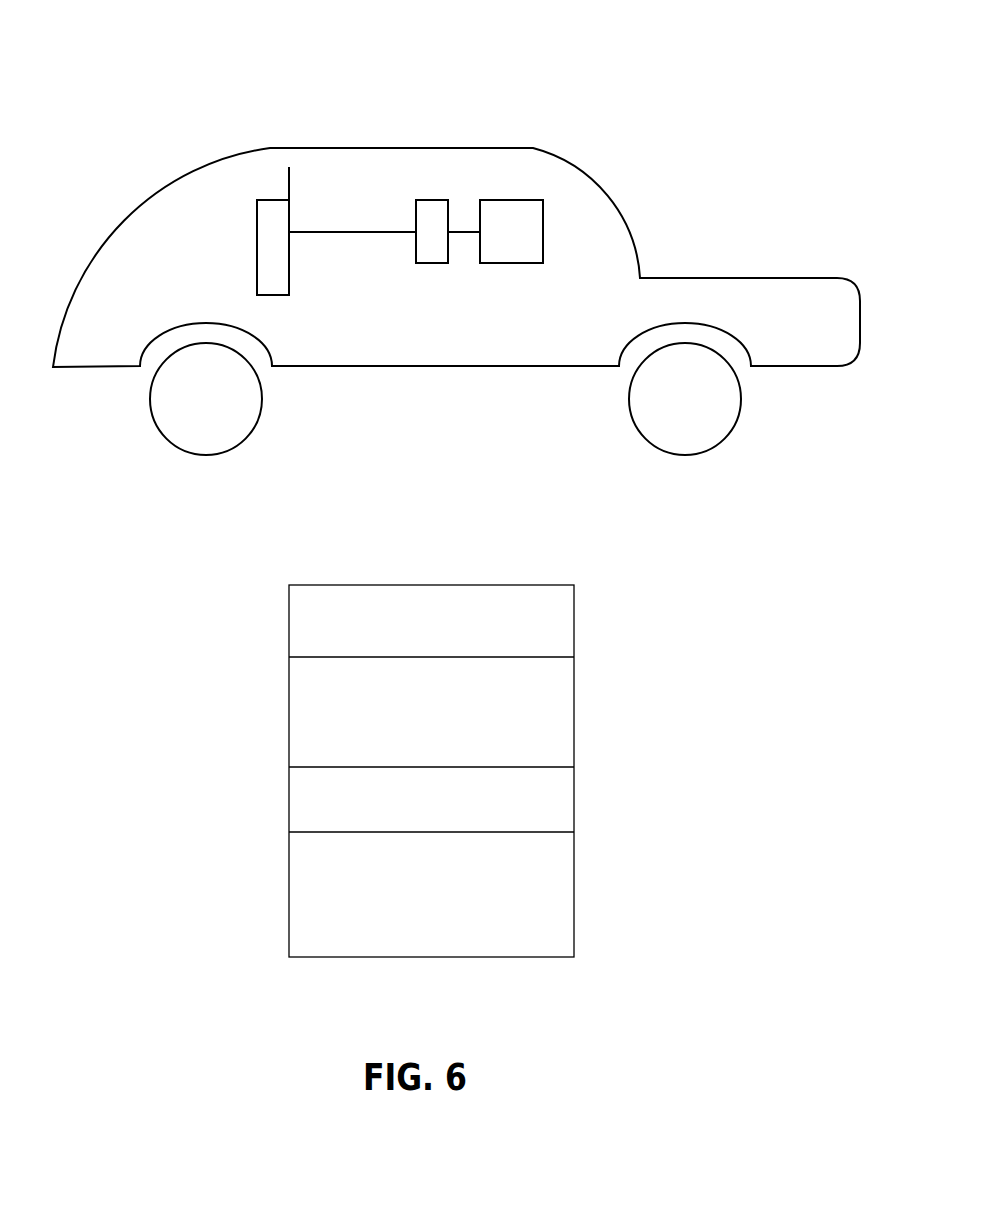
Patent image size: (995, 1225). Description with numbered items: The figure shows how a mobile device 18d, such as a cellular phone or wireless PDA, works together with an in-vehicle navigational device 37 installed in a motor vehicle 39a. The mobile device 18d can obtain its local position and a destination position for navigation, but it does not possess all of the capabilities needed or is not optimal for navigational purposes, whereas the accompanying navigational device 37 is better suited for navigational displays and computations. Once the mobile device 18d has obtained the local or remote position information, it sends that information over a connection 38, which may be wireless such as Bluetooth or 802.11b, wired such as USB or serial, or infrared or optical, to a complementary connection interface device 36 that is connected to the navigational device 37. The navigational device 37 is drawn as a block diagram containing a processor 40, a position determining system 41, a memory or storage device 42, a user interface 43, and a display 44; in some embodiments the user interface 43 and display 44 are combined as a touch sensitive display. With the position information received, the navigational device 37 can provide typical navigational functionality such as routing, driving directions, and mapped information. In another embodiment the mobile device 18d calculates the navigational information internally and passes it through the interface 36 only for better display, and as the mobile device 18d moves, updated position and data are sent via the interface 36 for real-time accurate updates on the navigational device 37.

The mobile device 18d is at (261, 189).
The connection interface device 36 is at (419, 186).
The navigational device 37 is at (514, 182).
The connection 38 is at (366, 244).
The motor vehicle 39a is at (383, 376).
The processor 40 is at (587, 608).
The position determining system 41 is at (587, 688).
The memory or storage device 42 is at (587, 798).
The user interface 43 is at (587, 862).
The display 44 is at (587, 926).